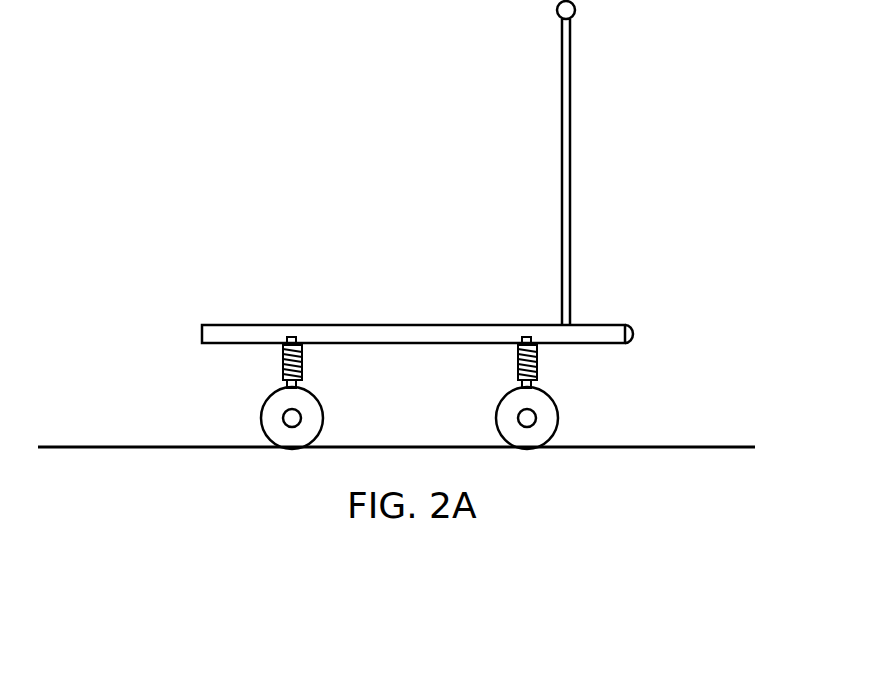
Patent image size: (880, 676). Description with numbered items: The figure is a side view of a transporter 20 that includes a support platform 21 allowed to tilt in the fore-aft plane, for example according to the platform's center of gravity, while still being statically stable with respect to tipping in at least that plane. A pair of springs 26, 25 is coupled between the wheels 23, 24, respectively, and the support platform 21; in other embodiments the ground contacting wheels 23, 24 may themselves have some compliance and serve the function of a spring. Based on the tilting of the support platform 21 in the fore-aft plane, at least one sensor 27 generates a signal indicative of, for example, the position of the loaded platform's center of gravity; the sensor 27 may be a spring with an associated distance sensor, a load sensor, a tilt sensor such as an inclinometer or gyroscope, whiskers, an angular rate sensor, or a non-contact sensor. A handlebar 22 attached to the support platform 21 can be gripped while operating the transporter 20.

The transporter 20 is at (688, 189).
The support platform 21 is at (358, 325).
The handlebar 22 is at (573, 38).
The wheel 23 is at (323, 415).
The wheel 24 is at (558, 415).
The spring 25 is at (517, 358).
The spring 26 is at (282, 356).
The sensor 27 is at (632, 326).